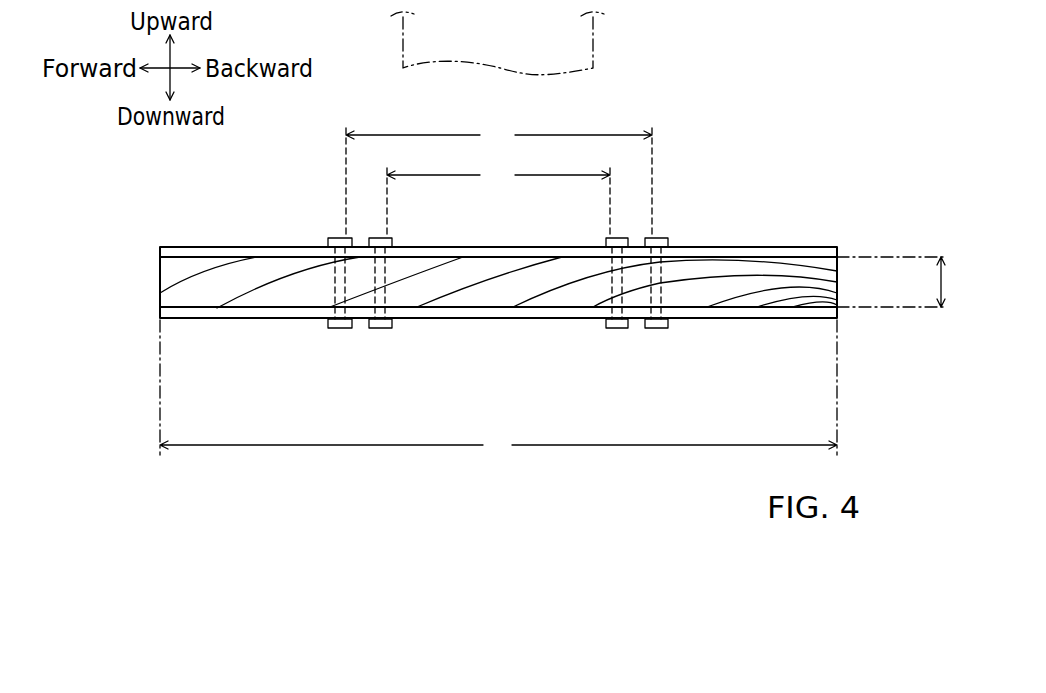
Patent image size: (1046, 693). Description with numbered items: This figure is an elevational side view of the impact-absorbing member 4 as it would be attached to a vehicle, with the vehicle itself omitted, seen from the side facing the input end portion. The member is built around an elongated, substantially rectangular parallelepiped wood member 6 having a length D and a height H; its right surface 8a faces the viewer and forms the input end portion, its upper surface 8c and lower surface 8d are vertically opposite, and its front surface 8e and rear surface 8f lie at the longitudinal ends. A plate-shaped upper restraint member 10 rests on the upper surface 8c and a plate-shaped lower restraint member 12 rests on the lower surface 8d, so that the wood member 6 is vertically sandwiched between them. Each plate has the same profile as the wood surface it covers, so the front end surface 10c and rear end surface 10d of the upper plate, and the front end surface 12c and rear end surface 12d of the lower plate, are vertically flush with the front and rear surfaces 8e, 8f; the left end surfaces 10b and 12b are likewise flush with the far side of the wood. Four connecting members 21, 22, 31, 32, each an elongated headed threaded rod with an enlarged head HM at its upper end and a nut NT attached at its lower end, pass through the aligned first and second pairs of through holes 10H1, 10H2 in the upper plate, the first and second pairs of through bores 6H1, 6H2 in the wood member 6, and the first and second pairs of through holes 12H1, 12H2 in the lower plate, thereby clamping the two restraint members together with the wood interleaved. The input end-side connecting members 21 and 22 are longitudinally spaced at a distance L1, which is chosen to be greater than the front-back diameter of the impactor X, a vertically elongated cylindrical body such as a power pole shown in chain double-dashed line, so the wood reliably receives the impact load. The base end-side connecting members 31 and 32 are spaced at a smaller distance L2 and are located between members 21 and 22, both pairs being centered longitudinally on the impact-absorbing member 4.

The impact-absorbing member 4 is at (807, 171).
The wood member 6 is at (151, 292).
The right surface 8a is at (237, 282).
The upper surface 8c is at (748, 250).
The lower surface 8d is at (738, 310).
The front surface 8e is at (160, 271).
The rear surface 8f is at (837, 283).
The upper restraint member 10 is at (189, 236).
The left end surface 10b is at (798, 250).
The front end surface 10c is at (160, 249).
The rear end surface 10d is at (837, 249).
The first pair of through holes 10H1 is at (330, 250).
The second pair of through holes 10H2 is at (395, 249).
The lower restraint member 12 is at (199, 328).
The left end surface 12b is at (793, 319).
The front end surface 12c is at (160, 311).
The rear end surface 12d is at (837, 318).
The first pair of through holes 12H1 is at (326, 319).
The second pair of through holes 12H2 is at (407, 320).
The first pair of through bores 6H1 is at (333, 280).
The second pair of through bores 6H2 is at (383, 288).
The first front connecting member 21 is at (334, 228).
The first rear connecting member 22 is at (673, 232).
The second front connecting member 31 is at (390, 338).
The second rear connecting member 32 is at (616, 339).
The nut NT is at (375, 329).
The head HM is at (380, 238).
The distance L1 is at (499, 180).
The distance L2 is at (498, 200).
The length D is at (498, 390).
The height H is at (899, 282).
The impactor X is at (593, 40).